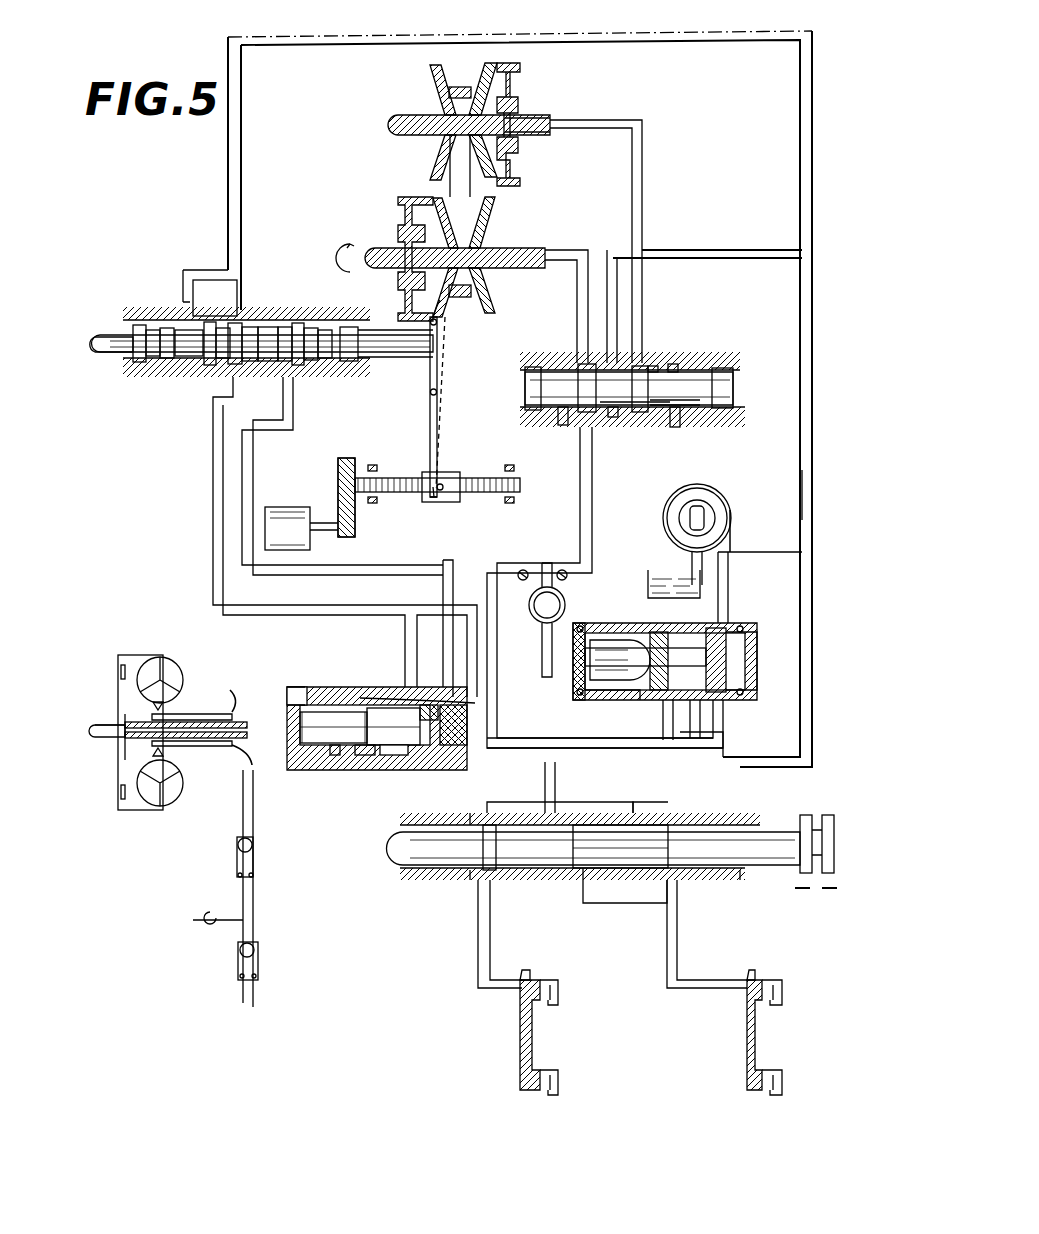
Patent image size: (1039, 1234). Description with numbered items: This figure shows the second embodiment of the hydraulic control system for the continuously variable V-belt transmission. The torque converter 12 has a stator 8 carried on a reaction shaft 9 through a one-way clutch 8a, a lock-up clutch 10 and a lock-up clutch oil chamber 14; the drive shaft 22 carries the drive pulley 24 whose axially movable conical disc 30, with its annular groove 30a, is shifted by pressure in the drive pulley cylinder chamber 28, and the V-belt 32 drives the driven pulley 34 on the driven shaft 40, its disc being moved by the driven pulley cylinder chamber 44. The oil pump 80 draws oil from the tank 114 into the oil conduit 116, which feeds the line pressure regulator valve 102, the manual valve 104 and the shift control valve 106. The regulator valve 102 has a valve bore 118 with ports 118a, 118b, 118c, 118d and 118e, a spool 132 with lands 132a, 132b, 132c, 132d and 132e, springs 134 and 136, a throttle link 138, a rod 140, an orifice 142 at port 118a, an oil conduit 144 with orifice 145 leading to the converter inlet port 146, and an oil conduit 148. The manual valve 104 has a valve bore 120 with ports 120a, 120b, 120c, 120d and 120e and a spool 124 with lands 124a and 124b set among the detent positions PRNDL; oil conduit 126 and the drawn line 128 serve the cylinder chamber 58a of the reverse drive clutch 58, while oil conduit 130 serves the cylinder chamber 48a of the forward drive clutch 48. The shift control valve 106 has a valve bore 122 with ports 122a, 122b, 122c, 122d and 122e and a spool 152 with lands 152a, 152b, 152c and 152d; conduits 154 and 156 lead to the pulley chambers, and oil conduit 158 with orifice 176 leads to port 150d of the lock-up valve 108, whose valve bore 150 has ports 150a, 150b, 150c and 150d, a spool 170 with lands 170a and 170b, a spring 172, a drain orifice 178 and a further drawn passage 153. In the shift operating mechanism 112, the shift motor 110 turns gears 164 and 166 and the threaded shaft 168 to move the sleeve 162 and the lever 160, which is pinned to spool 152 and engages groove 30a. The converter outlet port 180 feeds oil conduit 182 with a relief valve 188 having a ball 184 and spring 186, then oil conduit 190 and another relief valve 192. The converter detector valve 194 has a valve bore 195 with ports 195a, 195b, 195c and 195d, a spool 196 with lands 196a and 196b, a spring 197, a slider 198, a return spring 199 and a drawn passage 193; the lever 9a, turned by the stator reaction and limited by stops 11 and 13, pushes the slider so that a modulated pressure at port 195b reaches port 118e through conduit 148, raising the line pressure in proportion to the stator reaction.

The stator 8 is at (163, 673).
The one-way clutch 8a is at (178, 714).
The reaction shaft 9 is at (566, 600).
The lever 9a is at (542, 660).
The lock-up clutch 10 is at (138, 705).
The stop 11 is at (568, 572).
The torque converter 12 is at (107, 768).
The stop 13 is at (514, 589).
The lock-up clutch oil chamber 14 is at (118, 712).
The drive shaft 22 is at (385, 250).
The drive pulley 24 is at (387, 217).
The drive pulley cylinder chamber 28 is at (402, 292).
The axially movable conical disc 30 is at (449, 318).
The annular groove 30a is at (428, 200).
The V-belt 32 is at (452, 86).
The driven pulley 34 is at (487, 62).
The driven shaft 40 is at (410, 115).
The driven pulley cylinder chamber 44 is at (510, 86).
The forward drive multiple disc clutch 48 is at (764, 980).
The cylinder chamber 48a is at (750, 980).
The reverse drive multiple disc clutch 58 is at (552, 980).
The cylinder chamber 58a is at (524, 980).
The oil pump 80 is at (665, 528).
The line pressure regulator valve 102 is at (252, 312).
The manual valve 104 is at (720, 765).
The shift control valve 106 is at (598, 430).
The lock-up valve 108 is at (377, 787).
The shift motor 110 is at (298, 507).
The shift operating mechanism 112 is at (447, 436).
The tank 114 is at (700, 582).
The oil conduit 116 is at (801, 492).
The valve bore 118 is at (268, 362).
The port 118a is at (165, 328).
The port 118b is at (216, 298).
The port 118c is at (247, 327).
The port 118d is at (285, 326).
The port 118e is at (300, 322).
The valve bore 120 is at (520, 868).
The port 120a is at (478, 825).
The port 120b is at (560, 805).
The port 120c is at (583, 880).
The port 120d is at (640, 813).
The port 120e is at (680, 880).
The valve bore 122 is at (678, 420).
The port 122a is at (560, 425).
The port 122b is at (612, 420).
The port 122c is at (635, 412).
The port 122d is at (652, 360).
The port 122e is at (672, 362).
The spool 124 is at (420, 878).
The land 124a is at (475, 882).
The land 124b is at (615, 870).
The oil conduit 126 is at (556, 782).
The passage 128 is at (478, 955).
The oil conduit 130 is at (667, 957).
The spool 132 is at (209, 362).
The land 132a is at (152, 358).
The land 132b is at (223, 360).
The land 132c is at (232, 365).
The land 132d is at (310, 362).
The land 132e is at (324, 360).
The spring 134 is at (140, 325).
The spring 136 is at (350, 362).
The throttle link 138 is at (103, 332).
The rod 140 is at (405, 352).
The orifice 142 is at (186, 270).
The oil conduit 144 is at (213, 500).
The orifice 145 is at (212, 360).
The inlet port 146 is at (225, 690).
The oil conduit 148 is at (253, 486).
The valve bore 150 is at (295, 760).
The port 150a is at (320, 690).
The port 150b is at (395, 756).
The port 150c is at (478, 703).
The port 150d is at (460, 745).
The spool 152 is at (548, 372).
The land 152a is at (525, 378).
The land 152b is at (585, 364).
The land 152c is at (660, 412).
The land 152d is at (715, 368).
The valve port 153 is at (342, 650).
The conduit 154 is at (575, 247).
The conduit 156 is at (642, 194).
The oil conduit 158 is at (592, 510).
The lever 160 is at (420, 420).
The sleeve 162 is at (445, 502).
The gear 164 is at (355, 520).
The gear 166 is at (348, 458).
The shaft 168 is at (402, 478).
The spool 170 is at (370, 708).
The land 170a is at (360, 755).
The land 170b is at (445, 745).
The spring 172 is at (305, 712).
The orifice 176 is at (440, 560).
The orifice 178 is at (335, 756).
The torque converter outlet port 180 is at (240, 760).
The oil conduit 182 is at (254, 795).
The ball 184 is at (252, 845).
The spring 186 is at (252, 867).
The relief valve 188 is at (230, 858).
The oil conduit 190 is at (205, 912).
The relief valve 192 is at (290, 968).
The passage 193 is at (724, 735).
The converter detector valve 194 is at (730, 590).
The cylinder 195 is at (660, 632).
The drain port 195a is at (612, 696).
The port 195b is at (738, 750).
The port 195c is at (668, 705).
The port 195d is at (702, 705).
The spool 196 is at (730, 640).
The land 196a is at (680, 650).
The land 196b is at (735, 650).
The spring 197 is at (758, 632).
The slider 198 is at (575, 690).
The return spring 199 is at (610, 635).
The detent positions PRNDL is at (807, 840).